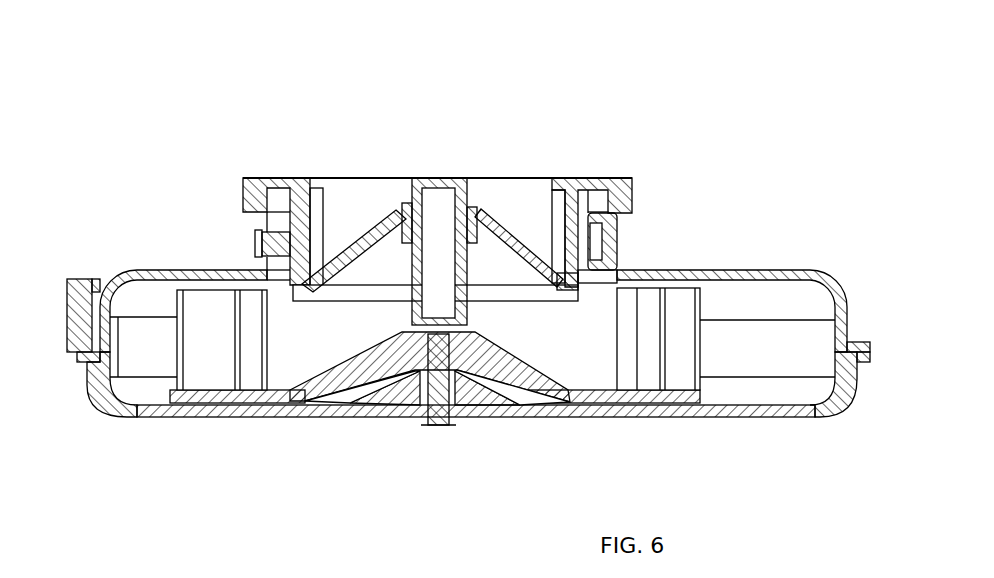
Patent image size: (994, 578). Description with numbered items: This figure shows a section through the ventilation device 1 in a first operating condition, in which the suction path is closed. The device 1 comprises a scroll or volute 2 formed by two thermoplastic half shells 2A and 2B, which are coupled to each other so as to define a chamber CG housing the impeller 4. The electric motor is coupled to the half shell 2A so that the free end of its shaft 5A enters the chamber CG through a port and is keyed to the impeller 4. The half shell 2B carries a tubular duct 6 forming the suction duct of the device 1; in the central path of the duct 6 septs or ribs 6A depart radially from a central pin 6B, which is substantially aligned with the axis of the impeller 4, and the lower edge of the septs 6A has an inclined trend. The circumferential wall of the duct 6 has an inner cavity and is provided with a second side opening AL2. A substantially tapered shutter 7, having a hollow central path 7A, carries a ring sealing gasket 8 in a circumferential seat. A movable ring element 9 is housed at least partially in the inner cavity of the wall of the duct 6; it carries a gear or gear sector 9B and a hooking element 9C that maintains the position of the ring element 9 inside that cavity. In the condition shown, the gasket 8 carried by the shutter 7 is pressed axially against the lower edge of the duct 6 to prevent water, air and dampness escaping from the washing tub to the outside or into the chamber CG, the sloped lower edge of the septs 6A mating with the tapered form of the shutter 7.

The ventilation device 1 is at (814, 154).
The scroll or volute 2 is at (775, 262).
The half shell 2A is at (824, 408).
The half shell 2B is at (842, 296).
The impeller 4 is at (712, 394).
The shaft 5A is at (438, 432).
The tubular duct 6 is at (279, 170).
The septs or ribs 6A is at (340, 190).
The central pin 6B is at (437, 178).
The shutter 7 is at (376, 212).
The hollow central path 7A is at (478, 183).
The ring sealing gasket 8 is at (296, 292).
The movable ring element 9 is at (604, 194).
The gear or gear sector 9B is at (258, 247).
The hooking element 9C is at (617, 244).
The second side opening AL2 is at (258, 222).
The chamber CG is at (143, 389).